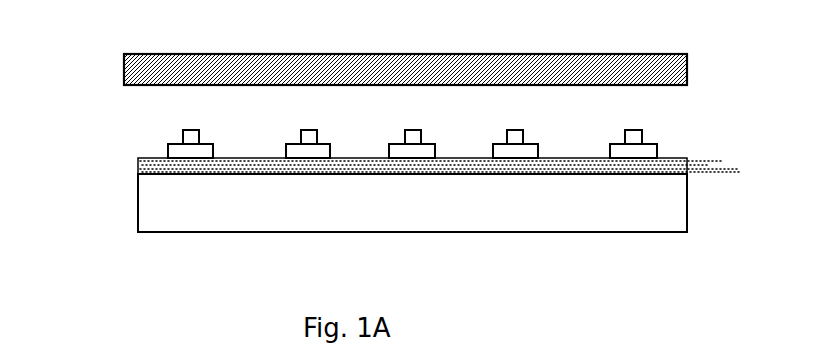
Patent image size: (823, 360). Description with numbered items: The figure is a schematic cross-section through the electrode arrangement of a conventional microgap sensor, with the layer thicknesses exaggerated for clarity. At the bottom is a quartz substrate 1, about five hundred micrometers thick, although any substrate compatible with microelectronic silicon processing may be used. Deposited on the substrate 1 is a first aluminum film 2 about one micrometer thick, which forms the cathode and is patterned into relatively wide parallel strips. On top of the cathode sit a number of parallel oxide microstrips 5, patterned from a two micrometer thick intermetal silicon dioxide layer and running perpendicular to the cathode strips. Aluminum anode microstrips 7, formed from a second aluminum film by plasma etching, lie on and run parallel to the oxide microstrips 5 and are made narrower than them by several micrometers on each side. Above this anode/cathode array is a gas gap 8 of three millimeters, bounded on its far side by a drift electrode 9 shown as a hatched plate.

The substrate 1 is at (316, 213).
The first aluminum film 2 is at (272, 172).
The oxide microstrips 5 is at (198, 152).
The anode microstrips 7 is at (192, 133).
The gas gap 8 is at (398, 188).
The drift electrode 9 is at (377, 72).